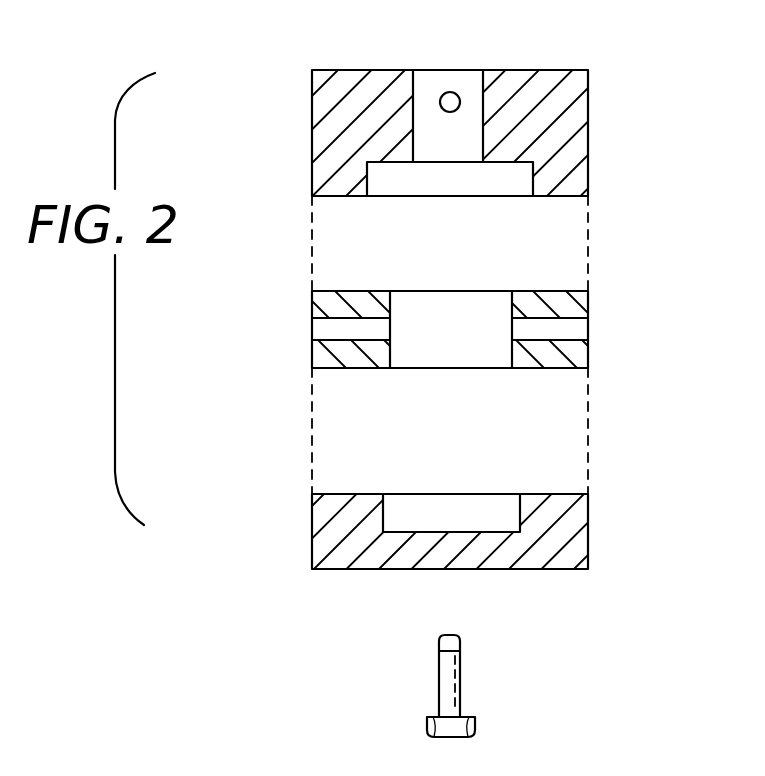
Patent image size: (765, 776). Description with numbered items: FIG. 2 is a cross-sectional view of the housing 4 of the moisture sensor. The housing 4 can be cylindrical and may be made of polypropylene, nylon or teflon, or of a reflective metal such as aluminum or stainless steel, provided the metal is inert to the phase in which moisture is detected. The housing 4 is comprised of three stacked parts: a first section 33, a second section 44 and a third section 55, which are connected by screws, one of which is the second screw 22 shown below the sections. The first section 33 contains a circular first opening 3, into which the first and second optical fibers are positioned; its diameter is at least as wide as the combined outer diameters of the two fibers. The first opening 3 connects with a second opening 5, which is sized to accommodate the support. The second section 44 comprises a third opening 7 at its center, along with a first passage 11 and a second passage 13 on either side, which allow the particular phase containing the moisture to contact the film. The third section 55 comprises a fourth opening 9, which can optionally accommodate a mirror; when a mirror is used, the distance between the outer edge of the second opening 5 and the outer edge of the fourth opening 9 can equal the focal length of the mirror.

The first section 33 is at (588, 105).
The first opening 3 is at (463, 78).
The second opening 5 is at (437, 187).
The second section 44 is at (588, 305).
The third opening 7 is at (467, 302).
The second passage 13 is at (312, 329).
The first passage 11 is at (588, 332).
The housing 4 is at (265, 330).
The third section 55 is at (588, 555).
The fourth opening 9 is at (470, 497).
The second screw 22 is at (475, 717).